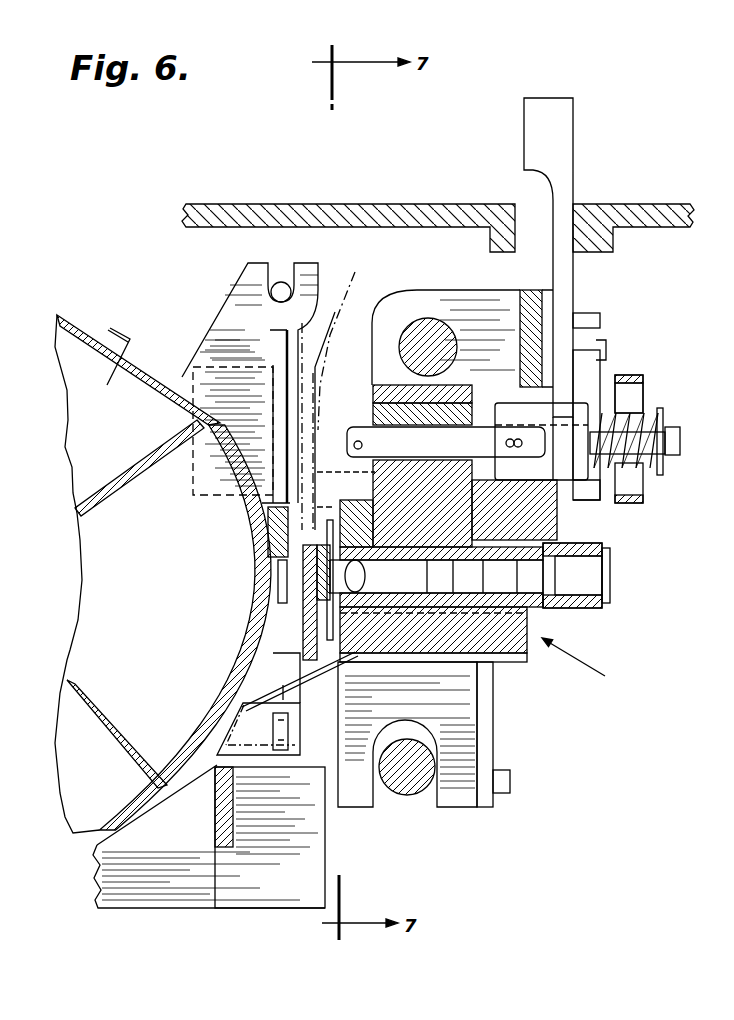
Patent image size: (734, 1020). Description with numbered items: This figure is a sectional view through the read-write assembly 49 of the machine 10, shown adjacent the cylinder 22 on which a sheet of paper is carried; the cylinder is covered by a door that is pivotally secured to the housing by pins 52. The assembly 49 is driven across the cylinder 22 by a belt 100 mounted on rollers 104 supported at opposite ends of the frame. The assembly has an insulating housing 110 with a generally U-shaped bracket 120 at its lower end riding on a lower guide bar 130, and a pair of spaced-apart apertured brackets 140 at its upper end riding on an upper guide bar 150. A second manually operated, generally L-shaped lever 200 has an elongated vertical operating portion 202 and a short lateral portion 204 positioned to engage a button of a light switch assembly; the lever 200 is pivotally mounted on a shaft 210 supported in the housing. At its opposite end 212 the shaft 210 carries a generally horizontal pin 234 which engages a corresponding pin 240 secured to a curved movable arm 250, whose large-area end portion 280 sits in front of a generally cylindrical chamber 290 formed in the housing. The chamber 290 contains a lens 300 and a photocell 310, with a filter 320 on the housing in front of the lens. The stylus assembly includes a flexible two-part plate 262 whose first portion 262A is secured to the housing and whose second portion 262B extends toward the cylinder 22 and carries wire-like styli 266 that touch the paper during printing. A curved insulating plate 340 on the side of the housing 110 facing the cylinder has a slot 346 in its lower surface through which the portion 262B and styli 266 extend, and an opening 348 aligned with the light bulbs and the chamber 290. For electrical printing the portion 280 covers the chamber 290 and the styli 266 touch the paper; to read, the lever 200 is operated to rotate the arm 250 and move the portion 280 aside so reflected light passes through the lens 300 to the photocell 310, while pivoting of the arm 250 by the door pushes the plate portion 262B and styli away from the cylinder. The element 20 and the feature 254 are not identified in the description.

The machine 10 is at (198, 180).
The mounting panel 20 is at (665, 205).
The cylinder 22 is at (78, 315).
The read-write assembly 49 is at (587, 663).
The pins 52 is at (275, 282).
The belt 100 is at (632, 375).
The rollers 104 is at (628, 400).
The insulating housing 110 is at (527, 292).
The U-shaped bracket 120 is at (465, 808).
The lower guide bar 130 is at (410, 792).
The apertured brackets 140 is at (376, 325).
The upper guide bar 150 is at (428, 340).
The second manually operated lever 200 is at (560, 100).
The elongated vertical operating portion 202 is at (578, 282).
The short lateral portion 204 is at (583, 508).
The shaft 210 is at (681, 446).
The opposite end of shaft 212 is at (346, 430).
The horizontal pin 234 is at (363, 446).
The pin 240 is at (241, 421).
The movable arm 250 is at (340, 368).
The pivot axis 254 is at (347, 337).
The two-part plate 262 is at (433, 657).
The first portion 262A is at (440, 662).
The second portion 262B is at (268, 758).
The wire-like styli 266 is at (240, 708).
The large-area end portion 280 is at (300, 622).
The cylindrical chamber 290 is at (276, 704).
The lens 300 is at (362, 537).
The photocell 310 is at (585, 612).
The filter 320 is at (305, 572).
The curved insulating plate 340 is at (290, 520).
The slot 346 is at (285, 690).
The opening 348 is at (282, 586).